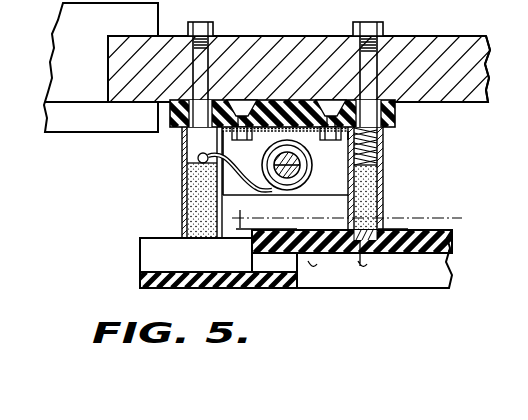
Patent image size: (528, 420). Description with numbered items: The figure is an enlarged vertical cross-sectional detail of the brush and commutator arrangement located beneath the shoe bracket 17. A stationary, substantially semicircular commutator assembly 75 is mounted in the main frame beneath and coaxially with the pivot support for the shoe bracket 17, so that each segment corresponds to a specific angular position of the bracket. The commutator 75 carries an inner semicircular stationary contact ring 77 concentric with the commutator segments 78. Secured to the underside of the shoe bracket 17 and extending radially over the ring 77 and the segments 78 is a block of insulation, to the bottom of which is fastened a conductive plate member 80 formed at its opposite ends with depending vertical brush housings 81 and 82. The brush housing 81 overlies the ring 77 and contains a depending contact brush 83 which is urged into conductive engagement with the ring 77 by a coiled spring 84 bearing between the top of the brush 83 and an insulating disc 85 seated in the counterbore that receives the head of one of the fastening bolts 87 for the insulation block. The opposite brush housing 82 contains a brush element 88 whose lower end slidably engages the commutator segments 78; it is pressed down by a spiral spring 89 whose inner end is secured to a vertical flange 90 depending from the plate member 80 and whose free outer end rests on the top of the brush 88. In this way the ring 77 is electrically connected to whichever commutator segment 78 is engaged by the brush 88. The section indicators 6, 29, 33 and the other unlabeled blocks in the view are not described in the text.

The section line 6- 6 is at (130, 232).
The shoe bracket 17 is at (470, 92).
The clamp block 29 is at (285, 69).
The ram 33 is at (177, 66).
The commutator assembly 75 is at (134, 280).
The stationary contact ring 77 is at (380, 229).
The commutator segments 78 is at (155, 246).
The conductive plate member 80 is at (267, 134).
The brush housing 81 is at (378, 156).
The brush housing 82 is at (182, 148).
The contact brush 83 is at (353, 180).
The coiled spring 84 is at (377, 133).
The insulating disc 85 is at (453, 69).
The fastening bolt 87 is at (382, 74).
The brush element 88 is at (193, 198).
The spiral spring 89 is at (252, 164).
The vertical flange 90 is at (318, 191).